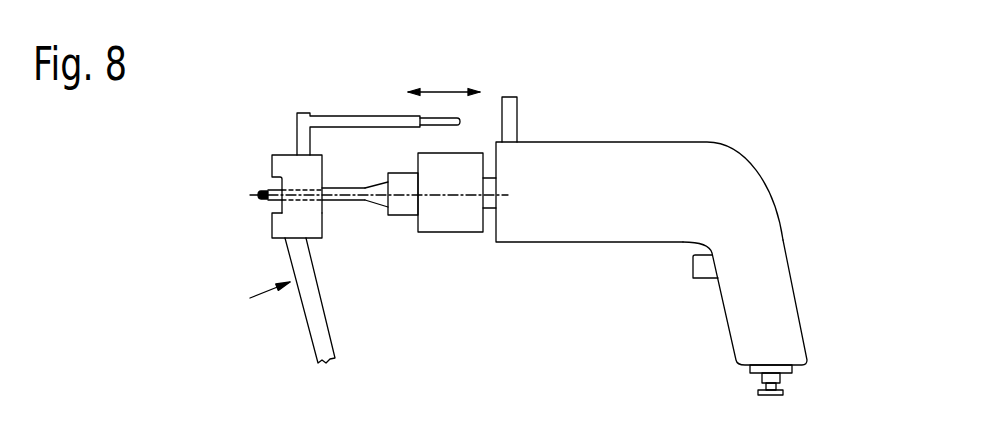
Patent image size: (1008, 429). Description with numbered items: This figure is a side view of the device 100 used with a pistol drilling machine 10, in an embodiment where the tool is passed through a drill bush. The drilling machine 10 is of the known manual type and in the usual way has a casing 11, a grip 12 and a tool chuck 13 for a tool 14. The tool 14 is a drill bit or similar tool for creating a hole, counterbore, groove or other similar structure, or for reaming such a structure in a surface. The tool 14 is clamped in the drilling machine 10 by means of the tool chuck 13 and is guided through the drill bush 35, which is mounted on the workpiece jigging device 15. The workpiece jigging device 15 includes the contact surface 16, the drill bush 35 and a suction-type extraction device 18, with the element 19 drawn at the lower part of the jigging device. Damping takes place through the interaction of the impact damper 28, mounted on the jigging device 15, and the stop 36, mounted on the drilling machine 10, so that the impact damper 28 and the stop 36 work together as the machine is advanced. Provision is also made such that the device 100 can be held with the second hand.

The device 100 is at (328, 85).
The impact damper 28 is at (355, 122).
The workpiece jigging device 15 is at (290, 165).
The contact surface 16 is at (272, 225).
The drill bush 35 is at (300, 187).
The tool 14 is at (345, 197).
The leg 19 is at (318, 327).
The suction-type extraction device 18 is at (256, 299).
The tool chuck 13 is at (446, 241).
The drilling machine 10 is at (672, 133).
The casing 11 is at (593, 170).
The stop 36 is at (512, 110).
The grip 12 is at (783, 320).